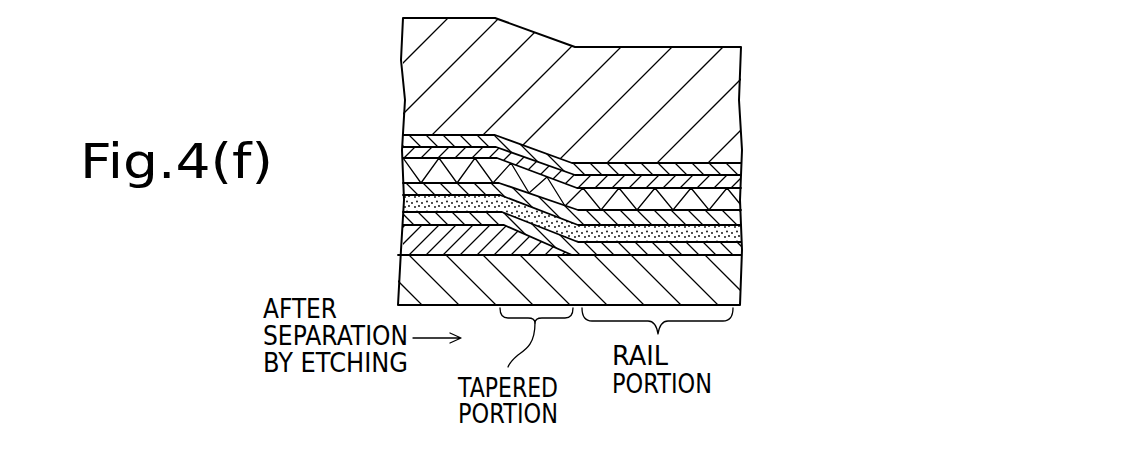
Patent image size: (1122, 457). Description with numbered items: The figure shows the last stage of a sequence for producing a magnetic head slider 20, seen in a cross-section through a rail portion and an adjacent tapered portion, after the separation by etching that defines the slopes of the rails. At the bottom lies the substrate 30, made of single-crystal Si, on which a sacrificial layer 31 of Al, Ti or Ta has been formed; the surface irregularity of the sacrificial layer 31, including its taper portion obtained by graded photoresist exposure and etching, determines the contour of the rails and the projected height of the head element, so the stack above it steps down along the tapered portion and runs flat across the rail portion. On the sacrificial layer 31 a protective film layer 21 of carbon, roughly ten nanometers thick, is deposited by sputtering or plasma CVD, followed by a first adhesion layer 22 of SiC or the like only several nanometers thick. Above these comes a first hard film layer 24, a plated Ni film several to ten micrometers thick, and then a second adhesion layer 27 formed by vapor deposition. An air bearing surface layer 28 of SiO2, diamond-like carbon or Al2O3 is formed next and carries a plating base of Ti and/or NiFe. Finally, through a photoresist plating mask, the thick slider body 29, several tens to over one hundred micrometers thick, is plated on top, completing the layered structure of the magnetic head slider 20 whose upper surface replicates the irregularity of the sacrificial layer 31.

The magnetic head slider 20 is at (821, 73).
The protective film layer 21 is at (742, 234).
The first adhesion layer 22 is at (742, 217).
The first hard film layer 24 is at (742, 193).
The second adhesion layer 27 is at (742, 182).
The air bearing surface layer 28 is at (736, 153).
The slider body 29 is at (727, 115).
The substrate 30 is at (713, 282).
The sacrificial layer 31 is at (742, 250).